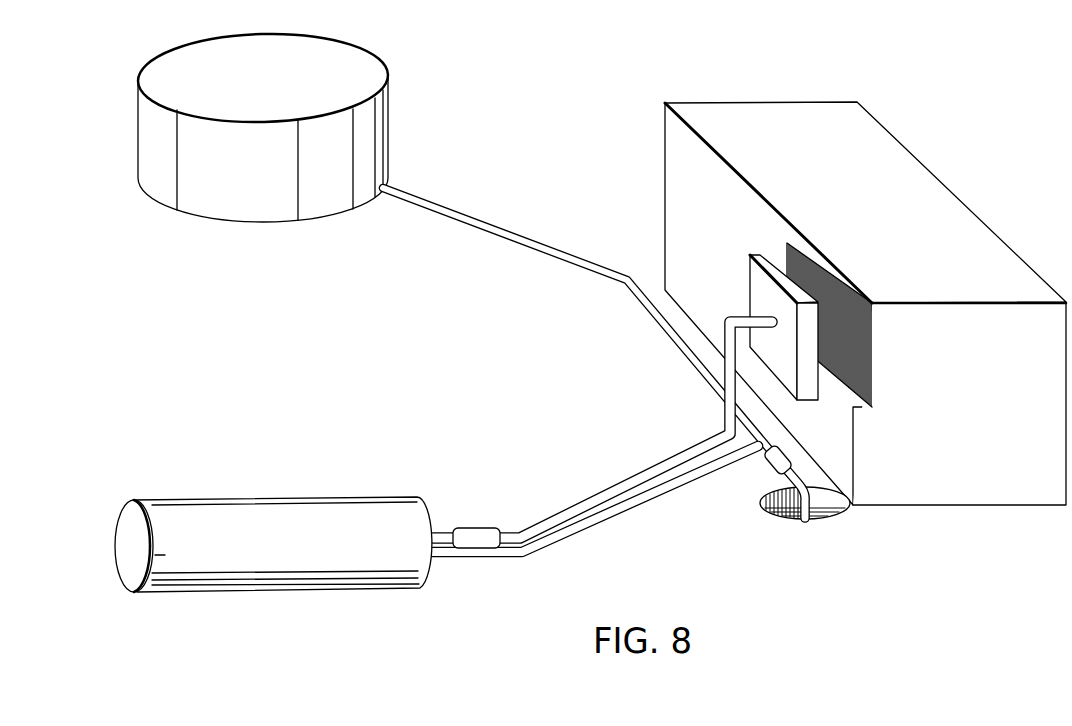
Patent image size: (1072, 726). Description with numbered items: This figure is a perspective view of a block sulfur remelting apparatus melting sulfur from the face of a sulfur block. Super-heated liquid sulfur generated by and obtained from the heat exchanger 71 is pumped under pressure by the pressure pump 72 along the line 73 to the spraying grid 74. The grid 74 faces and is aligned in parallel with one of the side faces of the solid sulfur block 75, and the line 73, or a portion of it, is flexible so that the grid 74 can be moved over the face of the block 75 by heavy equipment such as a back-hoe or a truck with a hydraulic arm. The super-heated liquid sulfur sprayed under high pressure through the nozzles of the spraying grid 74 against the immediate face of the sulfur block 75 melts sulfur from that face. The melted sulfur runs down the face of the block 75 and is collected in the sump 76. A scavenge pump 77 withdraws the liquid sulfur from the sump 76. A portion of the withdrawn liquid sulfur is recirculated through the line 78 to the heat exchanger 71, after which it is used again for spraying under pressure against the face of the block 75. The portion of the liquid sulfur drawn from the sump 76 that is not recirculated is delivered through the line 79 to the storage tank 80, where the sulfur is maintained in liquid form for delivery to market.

The heat exchanger 71 is at (130, 532).
The pressure pump 72 is at (488, 526).
The line 73 is at (655, 470).
The spraying grid 74 is at (757, 303).
The solid sulfur block 75 is at (887, 152).
The sump 76 is at (840, 503).
The scavenge pump 77 is at (767, 463).
The line 78 is at (553, 542).
The line 79 is at (632, 296).
The storage tank 80 is at (363, 153).